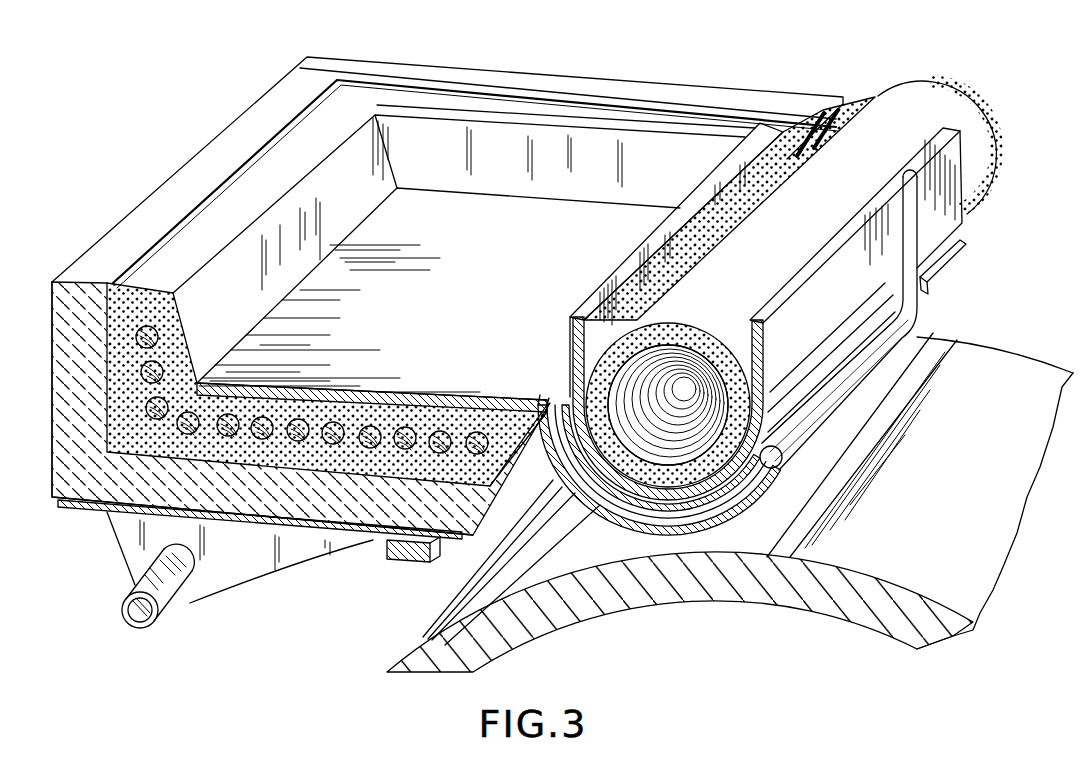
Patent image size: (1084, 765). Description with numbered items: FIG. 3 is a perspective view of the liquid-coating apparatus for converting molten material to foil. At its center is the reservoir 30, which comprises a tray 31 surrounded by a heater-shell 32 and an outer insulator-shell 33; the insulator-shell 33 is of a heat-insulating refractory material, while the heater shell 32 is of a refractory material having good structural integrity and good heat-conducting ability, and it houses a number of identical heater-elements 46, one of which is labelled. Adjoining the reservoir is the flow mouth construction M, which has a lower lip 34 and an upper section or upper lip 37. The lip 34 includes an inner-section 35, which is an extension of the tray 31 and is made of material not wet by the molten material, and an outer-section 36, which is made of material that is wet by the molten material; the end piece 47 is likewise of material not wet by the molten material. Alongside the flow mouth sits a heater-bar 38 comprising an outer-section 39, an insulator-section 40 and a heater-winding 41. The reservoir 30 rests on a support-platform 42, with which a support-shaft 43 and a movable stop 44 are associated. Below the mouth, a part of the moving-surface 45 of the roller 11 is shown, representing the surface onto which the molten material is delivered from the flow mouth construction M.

The roller 11 is at (1008, 346).
The reservoir 30 is at (432, 142).
The tray 31 is at (506, 136).
The heater-shell 32 is at (247, 183).
The insulator-shell 33 is at (175, 186).
The lip 34 is at (760, 505).
The inner-section 35 is at (786, 471).
The outer-section 36 is at (720, 518).
The upper lip 37 is at (746, 462).
The heater-bar 38 is at (946, 74).
The outer-section 39 is at (700, 340).
The insulator-section 40 is at (622, 360).
The heater-winding 41 is at (667, 390).
The support-platform 42 is at (232, 525).
The support-shaft 43 is at (173, 607).
The movable stop 44 is at (410, 560).
The moving-surface 45 is at (935, 358).
The heater-element 46 is at (163, 367).
The end piece 47 is at (953, 278).
The flow mouth construction M is at (827, 382).